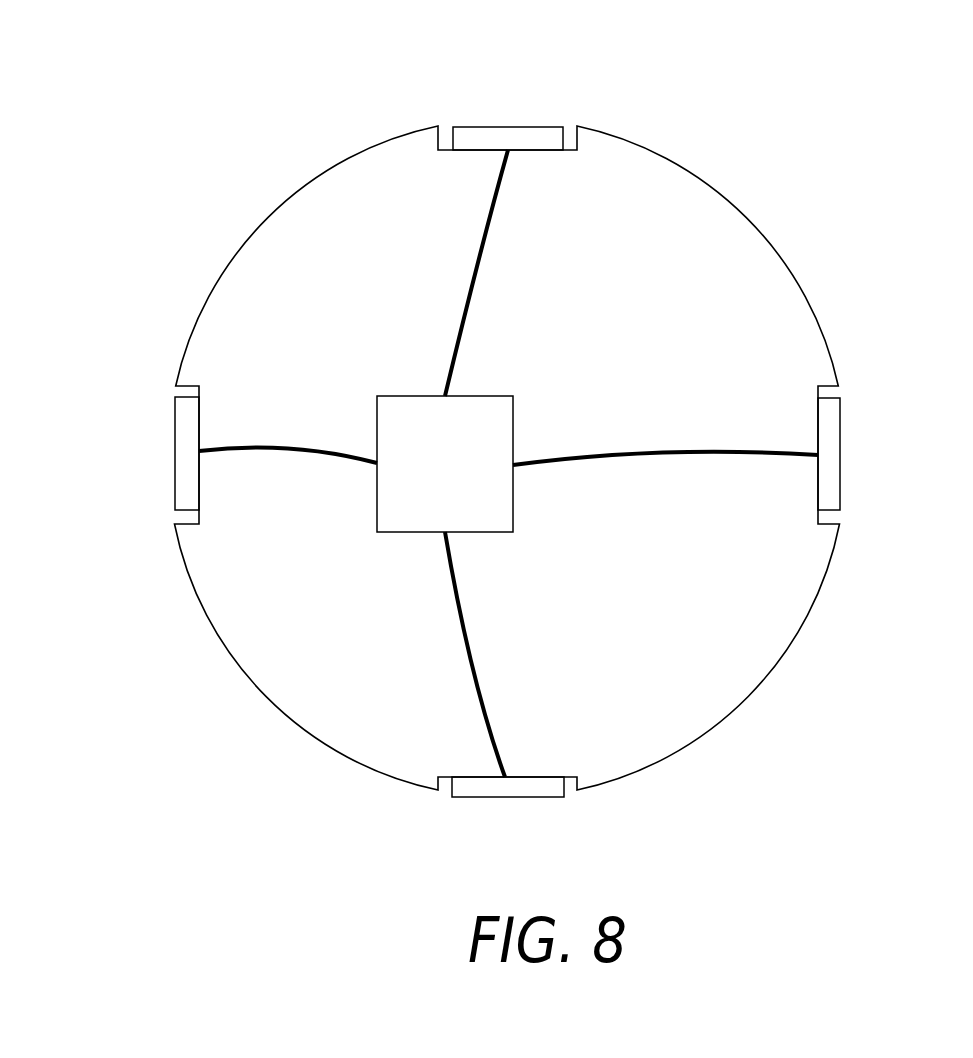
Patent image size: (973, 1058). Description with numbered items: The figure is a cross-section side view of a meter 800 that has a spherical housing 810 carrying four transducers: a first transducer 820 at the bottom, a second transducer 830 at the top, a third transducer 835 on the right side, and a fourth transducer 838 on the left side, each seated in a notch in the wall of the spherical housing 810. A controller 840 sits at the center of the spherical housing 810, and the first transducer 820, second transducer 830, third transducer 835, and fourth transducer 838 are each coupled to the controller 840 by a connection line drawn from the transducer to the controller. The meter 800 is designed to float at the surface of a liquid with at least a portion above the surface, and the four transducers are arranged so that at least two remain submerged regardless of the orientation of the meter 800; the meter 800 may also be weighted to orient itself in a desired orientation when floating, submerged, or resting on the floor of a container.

The meter 800 is at (884, 61).
The spherical housing 810 is at (707, 183).
The first transducer 820 is at (506, 797).
The second transducer 830 is at (508, 127).
The third transducer 835 is at (823, 510).
The fourth transducer 838 is at (184, 510).
The controller 840 is at (404, 396).